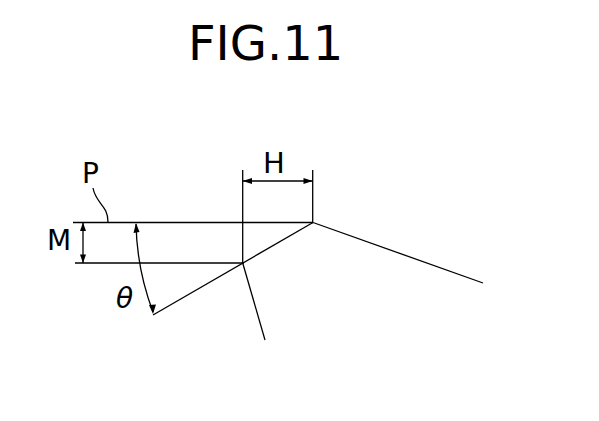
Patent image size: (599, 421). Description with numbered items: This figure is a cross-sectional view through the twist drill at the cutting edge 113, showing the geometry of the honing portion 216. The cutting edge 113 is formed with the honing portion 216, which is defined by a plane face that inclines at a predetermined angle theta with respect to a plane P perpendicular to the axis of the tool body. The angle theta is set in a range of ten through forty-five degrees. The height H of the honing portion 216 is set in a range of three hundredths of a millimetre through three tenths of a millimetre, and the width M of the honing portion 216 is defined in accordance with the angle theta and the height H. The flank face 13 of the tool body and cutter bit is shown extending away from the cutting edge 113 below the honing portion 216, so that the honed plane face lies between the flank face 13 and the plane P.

The cutting edge 113 is at (214, 203).
The honing portion 216 is at (280, 238).
The flank face 13 is at (257, 323).